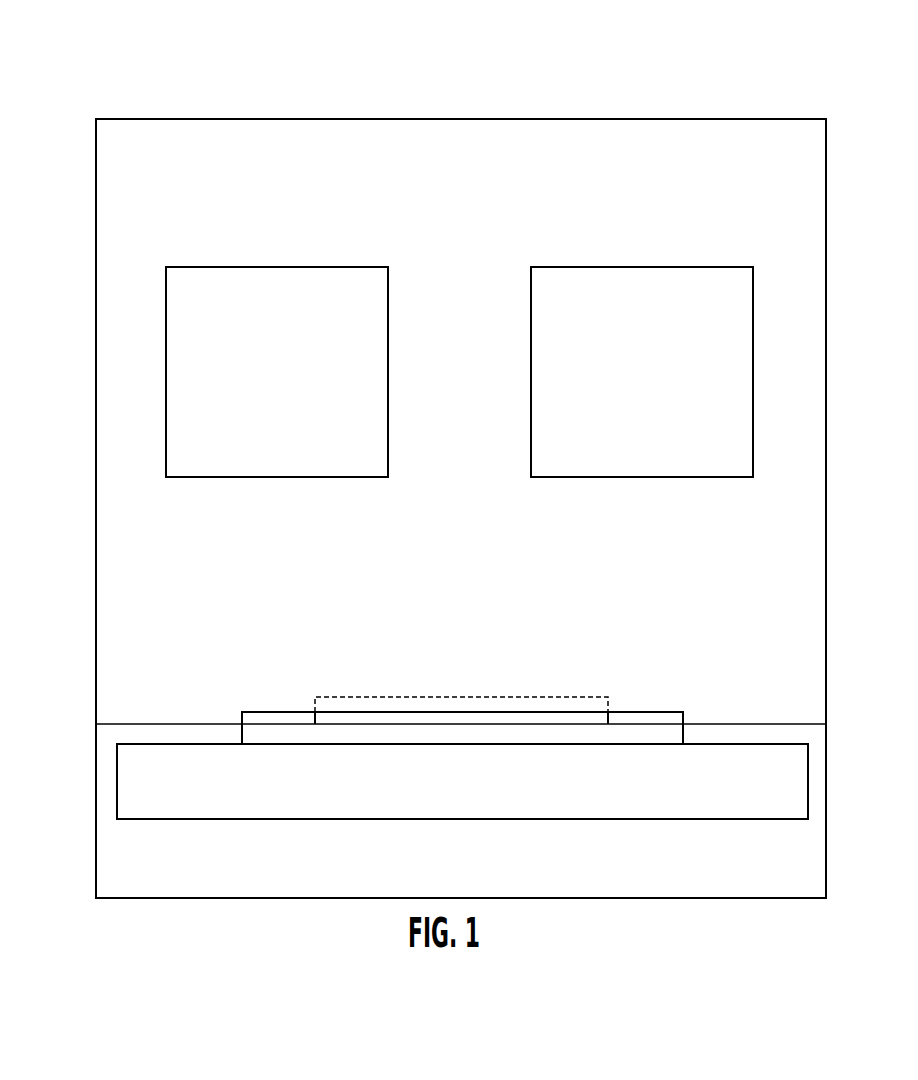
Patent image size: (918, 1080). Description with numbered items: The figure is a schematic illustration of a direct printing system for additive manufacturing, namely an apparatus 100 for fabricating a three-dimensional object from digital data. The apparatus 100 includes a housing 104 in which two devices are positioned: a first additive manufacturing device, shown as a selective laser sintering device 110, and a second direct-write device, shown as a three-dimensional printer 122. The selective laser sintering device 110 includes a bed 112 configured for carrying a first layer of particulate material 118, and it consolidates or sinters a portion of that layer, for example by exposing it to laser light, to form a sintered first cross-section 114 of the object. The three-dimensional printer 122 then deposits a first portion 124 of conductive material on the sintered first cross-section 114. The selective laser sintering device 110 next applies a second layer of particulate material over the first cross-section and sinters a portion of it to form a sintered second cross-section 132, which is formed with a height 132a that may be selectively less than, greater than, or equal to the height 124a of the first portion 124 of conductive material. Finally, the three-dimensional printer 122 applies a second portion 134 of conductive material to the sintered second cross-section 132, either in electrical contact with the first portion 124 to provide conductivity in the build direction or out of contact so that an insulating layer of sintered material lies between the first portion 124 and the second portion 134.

The apparatus 100 is at (243, 92).
The housing 104 is at (692, 118).
The selective laser sintering device 110 is at (295, 386).
The 3D printer 122 is at (660, 386).
The bed 112 is at (105, 807).
The particulate material 118 is at (200, 805).
The sintered second cross-section 132 is at (248, 718).
The height of sintered second cross-section 132a is at (270, 712).
The first portion of conductive material 124 is at (607, 718).
The height of first portion of conductive material 124a is at (574, 712).
The second portion of conductive material 134 is at (316, 697).
The sintered first cross-section 114 is at (673, 731).